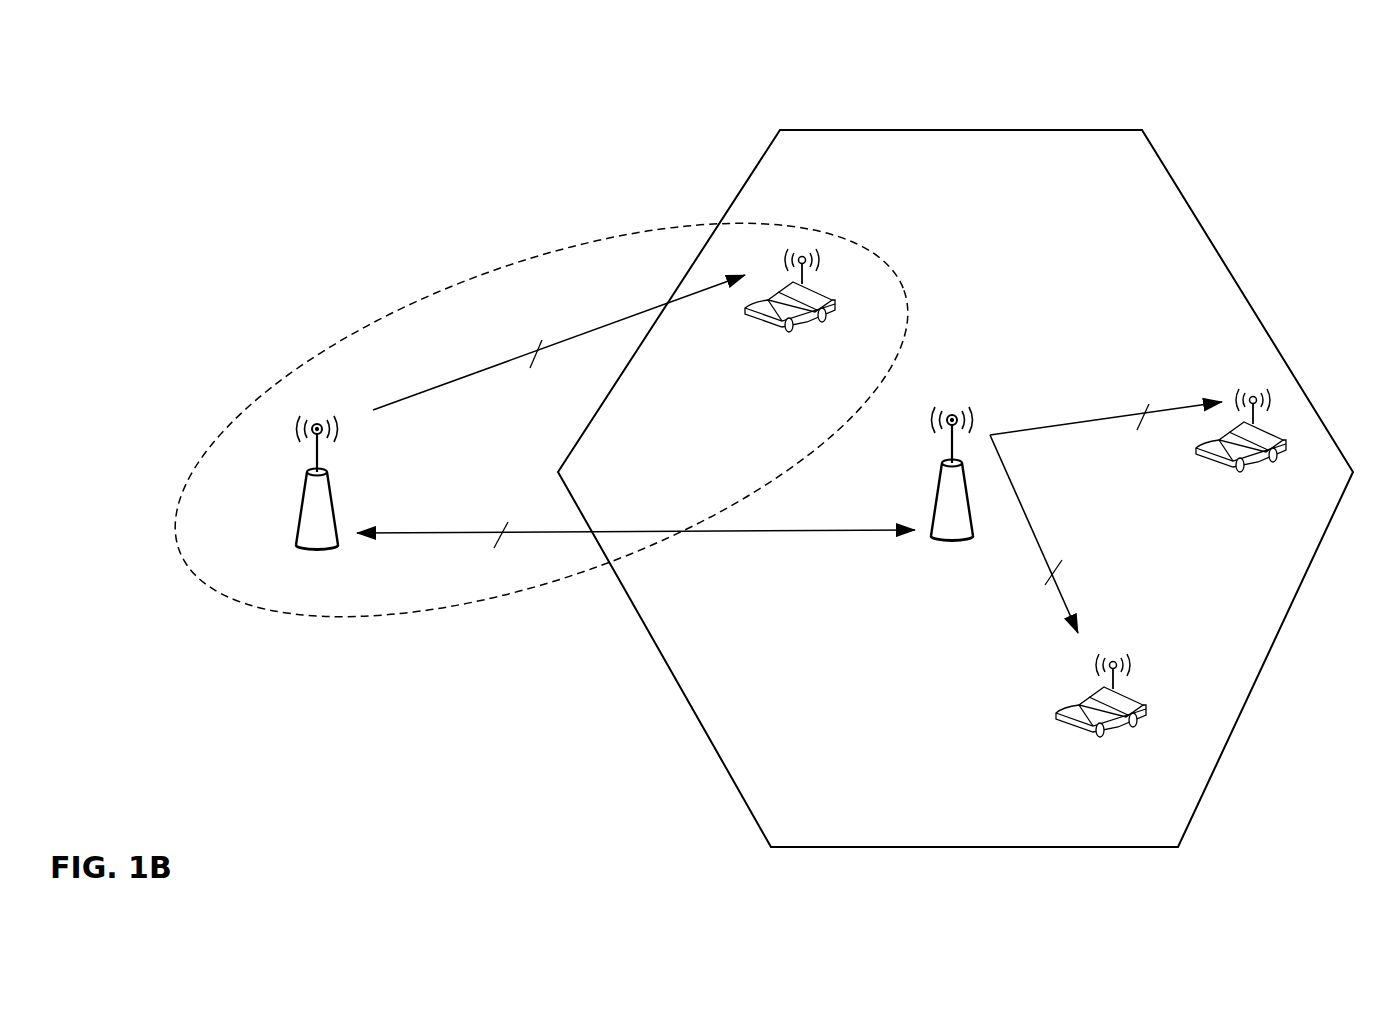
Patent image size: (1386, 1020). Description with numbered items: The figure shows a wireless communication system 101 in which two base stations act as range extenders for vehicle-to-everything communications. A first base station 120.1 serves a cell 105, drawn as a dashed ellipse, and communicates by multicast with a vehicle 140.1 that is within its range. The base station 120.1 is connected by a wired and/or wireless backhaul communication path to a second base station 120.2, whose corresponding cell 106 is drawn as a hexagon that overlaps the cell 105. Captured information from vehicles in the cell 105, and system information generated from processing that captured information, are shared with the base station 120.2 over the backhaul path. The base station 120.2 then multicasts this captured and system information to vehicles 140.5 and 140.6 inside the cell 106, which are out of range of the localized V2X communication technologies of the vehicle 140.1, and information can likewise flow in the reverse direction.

The wireless communication system 101 is at (1320, 98).
The cell 105 is at (412, 612).
The cell 106 is at (1240, 715).
The base station 120.1 is at (318, 503).
The base station 120.2 is at (952, 492).
The vehicle 140.1 is at (790, 315).
The vehicle 140.5 is at (1101, 721).
The vehicle 140.6 is at (1241, 456).